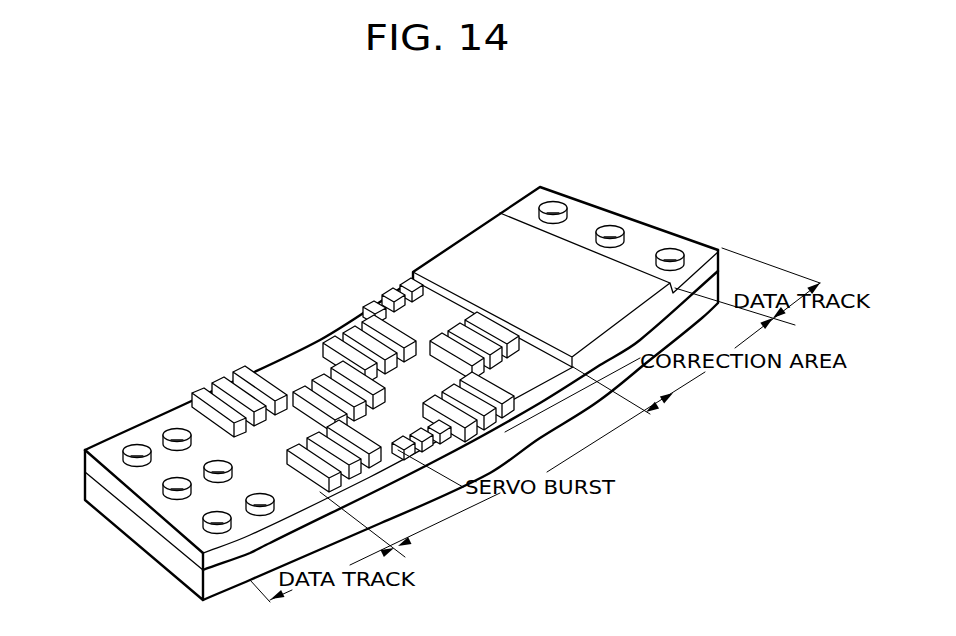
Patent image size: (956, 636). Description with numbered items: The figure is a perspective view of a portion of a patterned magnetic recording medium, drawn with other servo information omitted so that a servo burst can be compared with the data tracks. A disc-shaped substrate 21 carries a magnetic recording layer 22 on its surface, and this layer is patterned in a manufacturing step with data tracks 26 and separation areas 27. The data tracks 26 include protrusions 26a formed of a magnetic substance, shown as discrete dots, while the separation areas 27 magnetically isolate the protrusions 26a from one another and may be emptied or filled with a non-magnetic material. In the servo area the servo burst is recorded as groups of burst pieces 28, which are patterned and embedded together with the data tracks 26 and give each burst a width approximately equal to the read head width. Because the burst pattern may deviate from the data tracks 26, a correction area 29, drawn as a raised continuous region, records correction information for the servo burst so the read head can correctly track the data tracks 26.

The substrate 21 is at (90, 488).
The magnetic recording layer 22 is at (92, 459).
The data tracks 26 is at (172, 427).
The protrusions 26a is at (175, 430).
The separation areas 27 is at (147, 492).
The burst pieces 28 is at (220, 385).
The correction area 29 is at (468, 250).